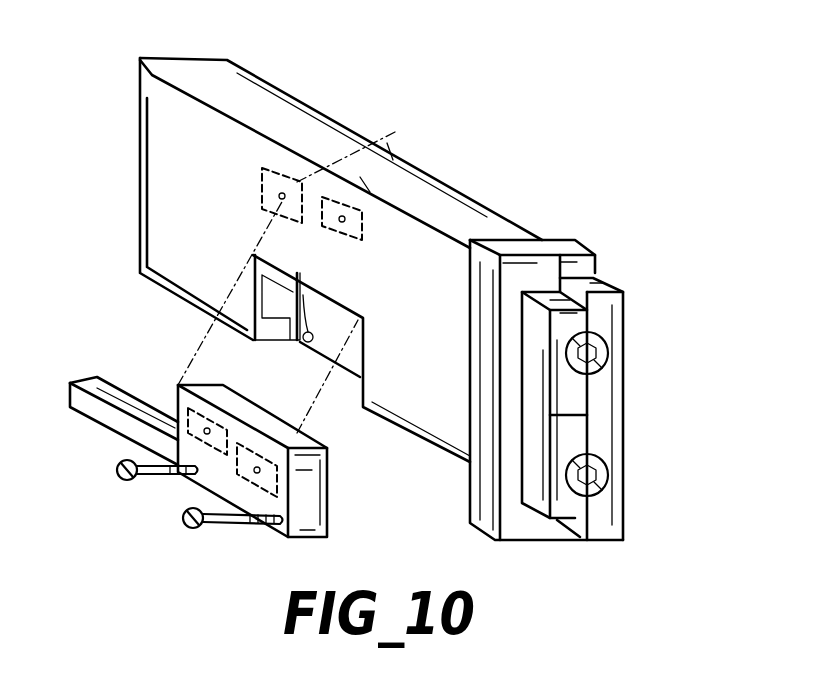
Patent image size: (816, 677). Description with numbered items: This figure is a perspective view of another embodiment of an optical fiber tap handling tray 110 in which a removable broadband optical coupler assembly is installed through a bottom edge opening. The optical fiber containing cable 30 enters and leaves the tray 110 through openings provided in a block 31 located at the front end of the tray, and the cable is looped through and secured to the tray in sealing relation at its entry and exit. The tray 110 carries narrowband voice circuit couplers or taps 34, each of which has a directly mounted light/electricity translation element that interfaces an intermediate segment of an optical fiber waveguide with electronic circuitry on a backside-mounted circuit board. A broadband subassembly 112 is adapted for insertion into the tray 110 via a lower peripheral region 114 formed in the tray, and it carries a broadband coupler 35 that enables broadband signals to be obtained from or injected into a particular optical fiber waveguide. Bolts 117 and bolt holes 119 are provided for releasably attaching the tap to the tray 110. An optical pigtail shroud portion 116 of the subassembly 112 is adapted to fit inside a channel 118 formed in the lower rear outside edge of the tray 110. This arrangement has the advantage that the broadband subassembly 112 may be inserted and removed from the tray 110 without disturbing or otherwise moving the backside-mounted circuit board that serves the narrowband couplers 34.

The tray 110 is at (547, 220).
The lower peripheral region 114 is at (336, 307).
The channel 118 is at (250, 318).
The bolt holes 119 is at (253, 257).
The voice circuit coupler or tap 34 is at (403, 130).
The block 31 is at (605, 309).
The optical fiber containing cable 30 is at (600, 364).
The optical pigtail shroud portion 116 is at (117, 412).
The bolts 117 is at (183, 514).
The broadband subassembly 112 is at (330, 502).
The broadband coupler 35 is at (340, 460).